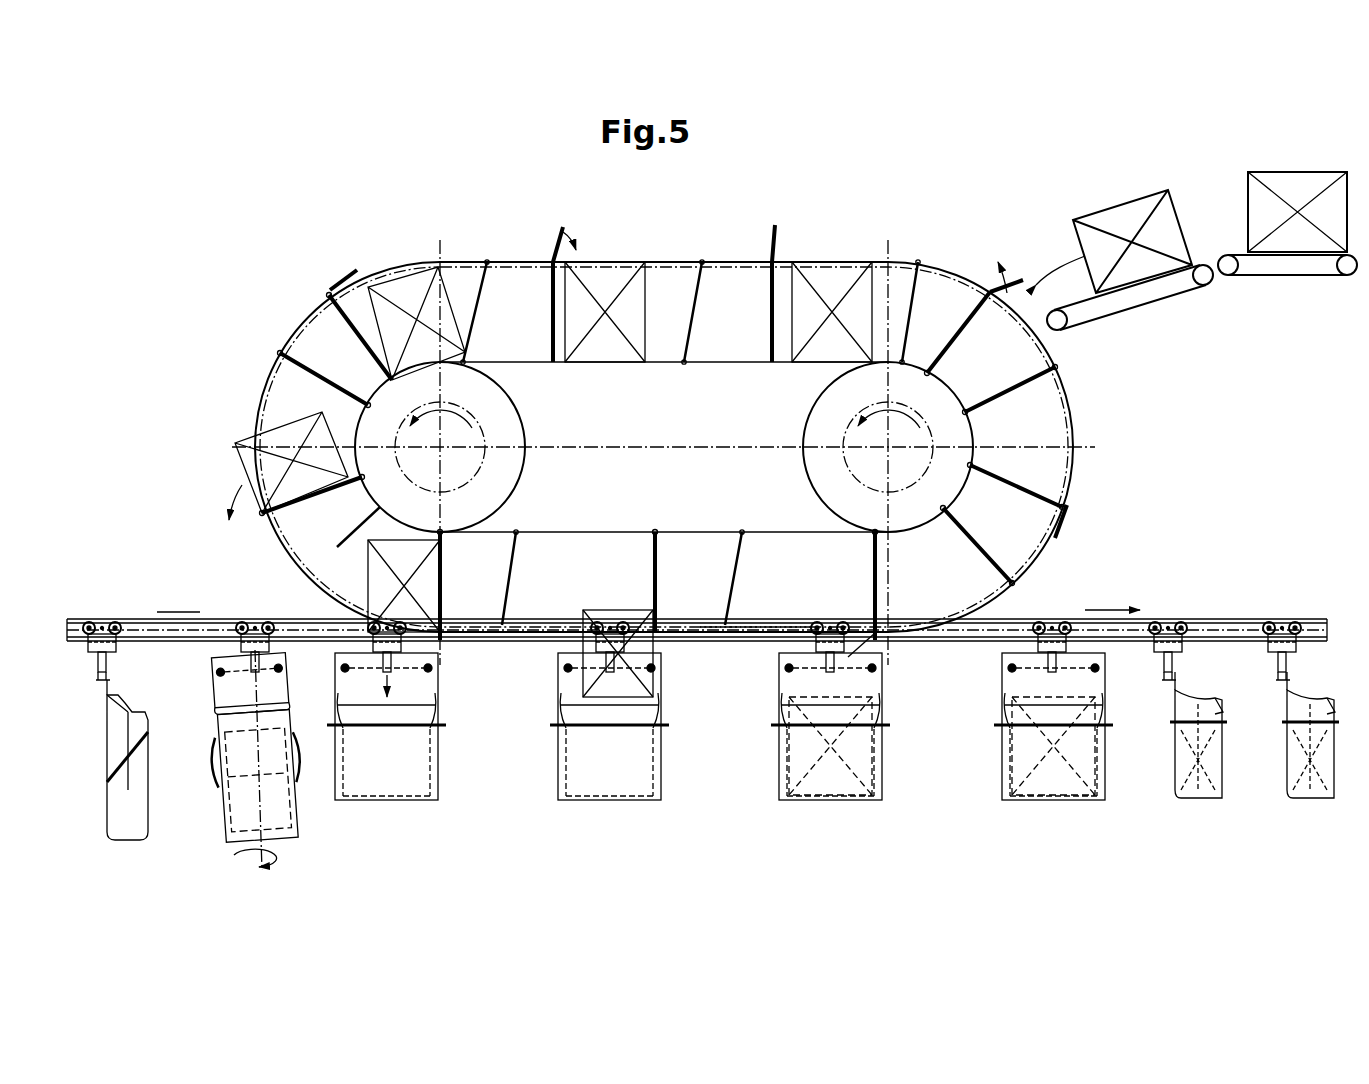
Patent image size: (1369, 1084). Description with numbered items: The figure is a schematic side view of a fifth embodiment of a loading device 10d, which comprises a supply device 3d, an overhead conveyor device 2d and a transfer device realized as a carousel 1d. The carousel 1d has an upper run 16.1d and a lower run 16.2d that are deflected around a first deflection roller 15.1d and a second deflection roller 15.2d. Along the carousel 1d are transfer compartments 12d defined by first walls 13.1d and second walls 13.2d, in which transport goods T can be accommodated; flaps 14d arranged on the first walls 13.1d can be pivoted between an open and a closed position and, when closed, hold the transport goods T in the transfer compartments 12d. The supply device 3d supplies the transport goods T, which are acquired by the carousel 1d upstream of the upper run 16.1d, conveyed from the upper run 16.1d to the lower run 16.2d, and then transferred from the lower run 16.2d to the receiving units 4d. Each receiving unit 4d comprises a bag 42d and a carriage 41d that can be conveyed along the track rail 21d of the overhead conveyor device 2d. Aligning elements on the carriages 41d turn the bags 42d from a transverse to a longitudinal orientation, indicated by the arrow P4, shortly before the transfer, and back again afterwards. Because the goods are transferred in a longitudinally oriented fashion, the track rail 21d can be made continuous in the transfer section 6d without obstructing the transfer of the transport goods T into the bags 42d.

The carousel 1d is at (745, 185).
The loading device 10d is at (245, 258).
The transfer compartments 12d is at (677, 280).
The first walls 13.1d is at (343, 318).
The second walls 13.2d is at (572, 247).
The flaps 14d is at (340, 278).
The first deflection roller 15.1d is at (497, 493).
The second deflection roller 15.2d is at (835, 437).
The upper run 16.1d is at (622, 380).
The lower run 16.2d is at (650, 512).
The overhead conveyor device 2d is at (130, 570).
The track rail 21d is at (205, 642).
The carriage 41d is at (122, 638).
The receiving units 4d is at (100, 720).
The bag 42d is at (135, 830).
The transfer section 6d is at (760, 628).
The supply device 3d is at (1228, 315).
The transport goods T is at (1125, 217).
The arrow indicating orientation change P4 is at (282, 866).